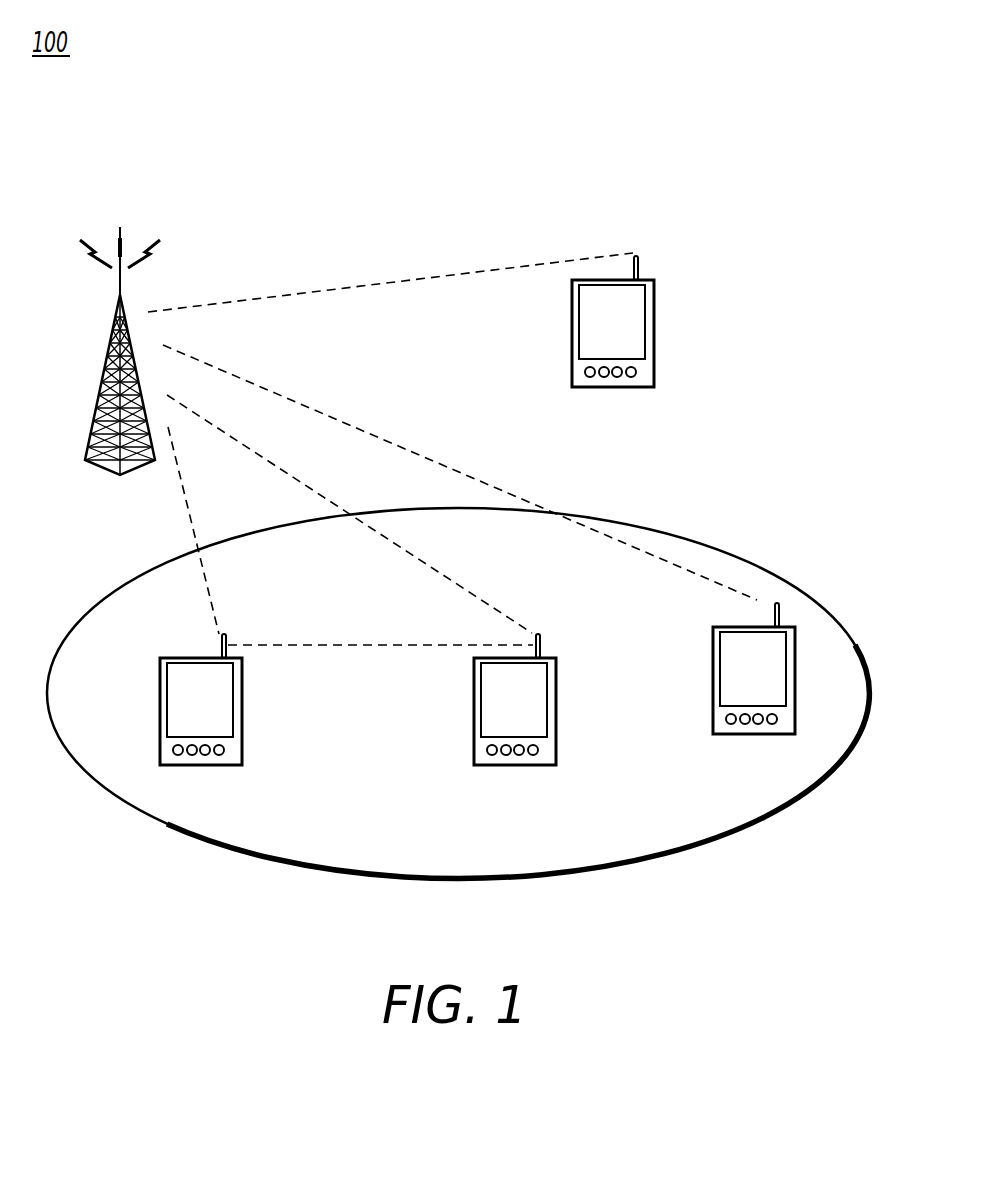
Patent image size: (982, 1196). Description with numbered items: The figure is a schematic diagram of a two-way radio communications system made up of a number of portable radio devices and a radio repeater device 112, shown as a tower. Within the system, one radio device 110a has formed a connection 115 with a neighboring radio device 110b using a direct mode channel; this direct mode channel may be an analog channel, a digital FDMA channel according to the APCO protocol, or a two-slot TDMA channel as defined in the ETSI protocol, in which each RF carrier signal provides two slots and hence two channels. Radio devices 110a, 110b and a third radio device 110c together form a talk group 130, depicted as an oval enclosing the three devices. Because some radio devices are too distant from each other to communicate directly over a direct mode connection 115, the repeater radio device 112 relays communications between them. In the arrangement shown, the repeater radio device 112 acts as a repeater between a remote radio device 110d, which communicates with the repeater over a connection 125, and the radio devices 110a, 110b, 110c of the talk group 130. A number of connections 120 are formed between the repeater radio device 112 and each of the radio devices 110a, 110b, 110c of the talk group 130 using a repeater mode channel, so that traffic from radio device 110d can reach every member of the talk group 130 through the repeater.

The radio repeater device 112 is at (103, 378).
The radio device 110a is at (190, 766).
The radio device 110b is at (497, 766).
The radio device 110c is at (735, 735).
The radio device 110d is at (656, 334).
The direct mode connection 115 is at (378, 648).
The repeater mode connection 120 is at (192, 520).
The connection 125 is at (395, 282).
The talk group 130 is at (76, 622).